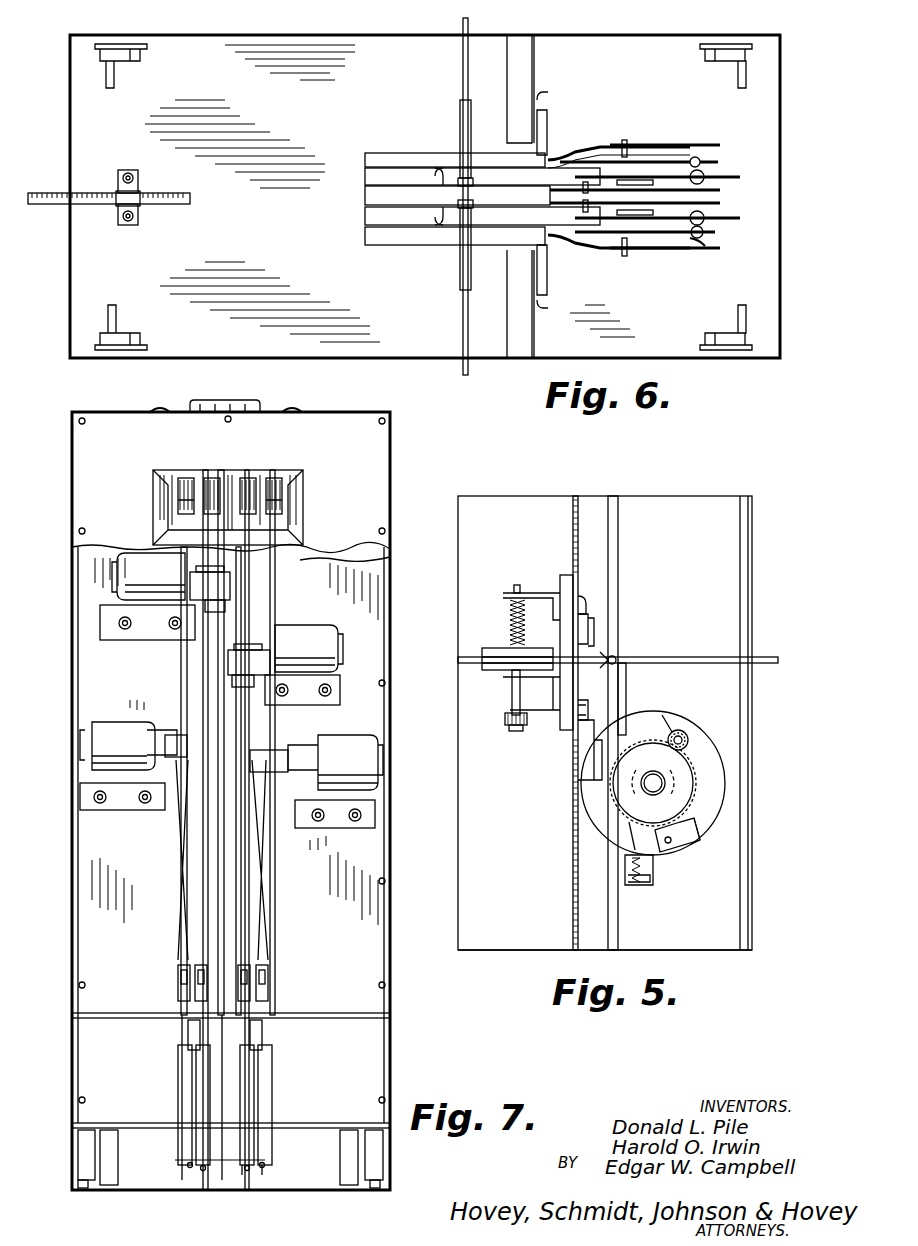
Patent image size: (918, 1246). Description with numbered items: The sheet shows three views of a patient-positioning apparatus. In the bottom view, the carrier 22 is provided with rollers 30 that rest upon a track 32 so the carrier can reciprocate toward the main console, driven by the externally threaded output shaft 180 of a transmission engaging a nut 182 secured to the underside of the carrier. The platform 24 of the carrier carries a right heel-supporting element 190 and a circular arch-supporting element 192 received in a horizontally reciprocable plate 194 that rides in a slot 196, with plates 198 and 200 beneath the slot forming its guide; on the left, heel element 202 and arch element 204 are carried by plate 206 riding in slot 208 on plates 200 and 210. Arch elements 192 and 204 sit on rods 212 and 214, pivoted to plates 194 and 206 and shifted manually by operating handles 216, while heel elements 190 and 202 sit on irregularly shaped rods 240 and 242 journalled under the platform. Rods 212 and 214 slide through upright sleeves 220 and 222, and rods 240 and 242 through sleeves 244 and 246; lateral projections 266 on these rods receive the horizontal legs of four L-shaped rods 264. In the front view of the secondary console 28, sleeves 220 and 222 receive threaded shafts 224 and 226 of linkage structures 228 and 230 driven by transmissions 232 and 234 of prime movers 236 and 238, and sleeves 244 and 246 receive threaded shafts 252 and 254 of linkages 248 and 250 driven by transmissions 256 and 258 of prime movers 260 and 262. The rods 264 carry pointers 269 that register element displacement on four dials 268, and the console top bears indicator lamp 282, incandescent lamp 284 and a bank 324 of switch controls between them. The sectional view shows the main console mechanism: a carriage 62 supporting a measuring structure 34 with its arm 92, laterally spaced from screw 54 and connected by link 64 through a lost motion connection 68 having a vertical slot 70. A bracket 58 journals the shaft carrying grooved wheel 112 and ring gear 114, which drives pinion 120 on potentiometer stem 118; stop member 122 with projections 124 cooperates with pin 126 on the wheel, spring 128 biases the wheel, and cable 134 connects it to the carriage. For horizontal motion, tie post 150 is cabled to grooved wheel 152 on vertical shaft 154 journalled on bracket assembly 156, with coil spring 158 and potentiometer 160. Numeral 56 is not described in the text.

In FIG. 6, the carrier 22 is at (172, 36).
In FIG. 7, the platform 24 is at (297, 1123).
In FIG. 7, the secondary console 28 is at (392, 468).
In FIG. 6, the rollers 30 is at (143, 54).
In FIG. 7, the rollers 30 is at (78, 1150).
In FIG. 7, the track 32 is at (84, 1190).
In FIG. 5, the measuring structures 34 is at (772, 658).
In FIG. 5, the screw 54 is at (572, 858).
In FIG. 5, the frame bottom member 56 is at (618, 940).
In FIG. 5, the bracket 58 is at (626, 690).
In FIG. 5, the carriage 62 is at (560, 580).
In FIG. 5, the link 64 is at (596, 638).
In FIG. 5, the lost motion connection 68 is at (588, 606).
In FIG. 5, the slot 70 is at (592, 624).
In FIG. 5, the arm 92 is at (692, 656).
In FIG. 5, the grooved wheel 112 is at (722, 755).
In FIG. 5, the ring gear 114 is at (696, 783).
In FIG. 5, the stem 118 is at (684, 732).
In FIG. 5, the pinion 120 is at (672, 730).
In FIG. 5, the stop member 122 is at (668, 855).
In FIG. 5, the projections 124 is at (696, 850).
In FIG. 5, the pin 126 is at (680, 845).
In FIG. 5, the spring 128 is at (655, 878).
In FIG. 5, the cable 134 is at (580, 748).
In FIG. 5, the tie post 150 is at (614, 656).
In FIG. 5, the grooved wheel 152 is at (500, 648).
In FIG. 5, the vertical shaft 154 is at (512, 694).
In FIG. 5, the bracket assembly 156 is at (540, 592).
In FIG. 5, the coil spring 158 is at (510, 610).
In FIG. 5, the potentiometer 160 is at (510, 725).
In FIG. 6, the output shaft 180 is at (60, 205).
In FIG. 6, the nut 182 is at (135, 193).
In FIG. 6, the heel-supporting element 190 is at (672, 240).
In FIG. 6, the arch-supporting element 192 is at (588, 250).
In FIG. 6, the plate 194 is at (448, 226).
In FIG. 6, the slot 196 is at (365, 216).
In FIG. 6, the plate 198 is at (368, 240).
In FIG. 6, the plate 200 is at (365, 196).
In FIG. 6, the heel-supporting element 202 is at (660, 160).
In FIG. 6, the arch-supporting element 204 is at (580, 150).
In FIG. 6, the plate 206 is at (448, 168).
In FIG. 6, the slot 208 is at (365, 176).
In FIG. 6, the plate 210 is at (390, 153).
In FIG. 6, the rod 212 is at (722, 219).
In FIG. 7, the rod 212 is at (244, 1180).
In FIG. 6, the rod 214 is at (722, 176).
In FIG. 7, the rod 214 is at (186, 1185).
In FIG. 6, the operating handles 216 is at (460, 105).
In FIG. 6, the sleeve 220 is at (722, 204).
In FIG. 7, the sleeve 220 is at (264, 1180).
In FIG. 6, the sleeve 222 is at (722, 190).
In FIG. 7, the sleeve 222 is at (218, 1185).
In FIG. 7, the threaded shaft 224 is at (262, 1031).
In FIG. 7, the threaded shaft 226 is at (188, 1031).
In FIG. 7, the linkage structure 228 is at (249, 887).
In FIG. 7, the linkage structure 230 is at (203, 881).
In FIG. 7, the transmission 232 is at (252, 650).
In FIG. 7, the transmission 234 is at (200, 572).
In FIG. 7, the prime mover 236 is at (330, 652).
In FIG. 7, the prime mover 238 is at (116, 580).
In FIG. 6, the rod 240 is at (705, 250).
In FIG. 7, the rod 240 is at (265, 1160).
In FIG. 6, the rod 242 is at (705, 143).
In FIG. 7, the rod 242 is at (190, 1160).
In FIG. 6, the sleeve 244 is at (715, 246).
In FIG. 7, the sleeve 244 is at (272, 1080).
In FIG. 6, the sleeve 246 is at (703, 158).
In FIG. 7, the linkage 248 is at (268, 940).
In FIG. 7, the linkage 250 is at (180, 937).
In FIG. 7, the threaded shaft 252 is at (270, 1003).
In FIG. 7, the threaded shaft 254 is at (178, 1000).
In FIG. 7, the transmission 256 is at (310, 745).
In FIG. 7, the transmission 258 is at (175, 735).
In FIG. 7, the prime mover 260 is at (320, 790).
In FIG. 7, the prime mover 262 is at (90, 752).
In FIG. 6, the L-shaped rods 264 is at (627, 142).
In FIG. 7, the L-shaped rods 264 is at (186, 1093).
In FIG. 7, the lateral projections 266 is at (175, 1166).
In FIG. 7, the dials 268 is at (210, 470).
In FIG. 7, the pointers 269 is at (178, 500).
In FIG. 7, the indicator lamp 282 is at (294, 406).
In FIG. 7, the incandescent lamp 284 is at (160, 408).
In FIG. 7, the bank of switch controls 324 is at (240, 394).